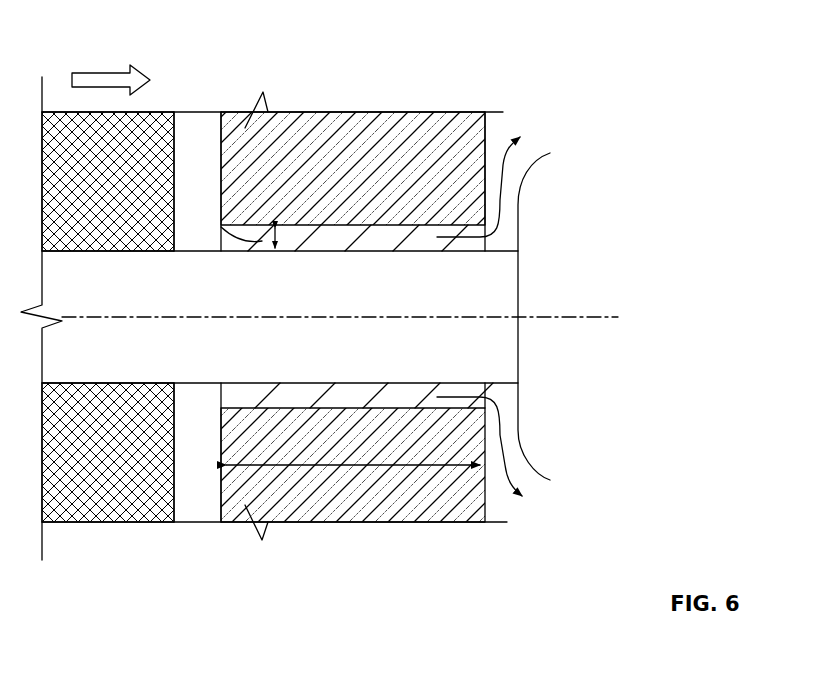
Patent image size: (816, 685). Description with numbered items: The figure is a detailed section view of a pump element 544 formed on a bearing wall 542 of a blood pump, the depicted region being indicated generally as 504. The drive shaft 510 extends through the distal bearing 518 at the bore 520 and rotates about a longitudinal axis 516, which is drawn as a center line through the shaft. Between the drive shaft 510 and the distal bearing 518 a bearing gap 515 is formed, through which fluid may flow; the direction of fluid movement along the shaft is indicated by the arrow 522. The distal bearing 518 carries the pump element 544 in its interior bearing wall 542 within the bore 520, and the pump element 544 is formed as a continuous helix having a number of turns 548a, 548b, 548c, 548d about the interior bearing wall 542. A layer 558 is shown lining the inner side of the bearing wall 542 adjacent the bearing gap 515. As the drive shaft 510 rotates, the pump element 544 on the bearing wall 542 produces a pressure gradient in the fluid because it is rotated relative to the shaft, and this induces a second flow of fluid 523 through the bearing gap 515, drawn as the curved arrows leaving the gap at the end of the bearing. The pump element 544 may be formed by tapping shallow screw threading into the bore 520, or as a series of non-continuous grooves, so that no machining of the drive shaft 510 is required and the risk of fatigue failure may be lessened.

The assembly 504 is at (560, 230).
The drive shaft 510 is at (497, 300).
The longitudinal axis 516 is at (583, 318).
The flow direction 522 is at (96, 80).
The bore 520 is at (230, 243).
The pump element 544 is at (358, 232).
The bearing wall 542 is at (398, 225).
The layer 558 is at (230, 242).
The second flow of fluid 523 is at (492, 188).
The bearing gap 515 is at (228, 398).
The turn 548a is at (272, 396).
The turn 548b is at (345, 395).
The turn 548c is at (400, 395).
The turn 548d is at (445, 395).
The distal bearing 518 is at (450, 500).